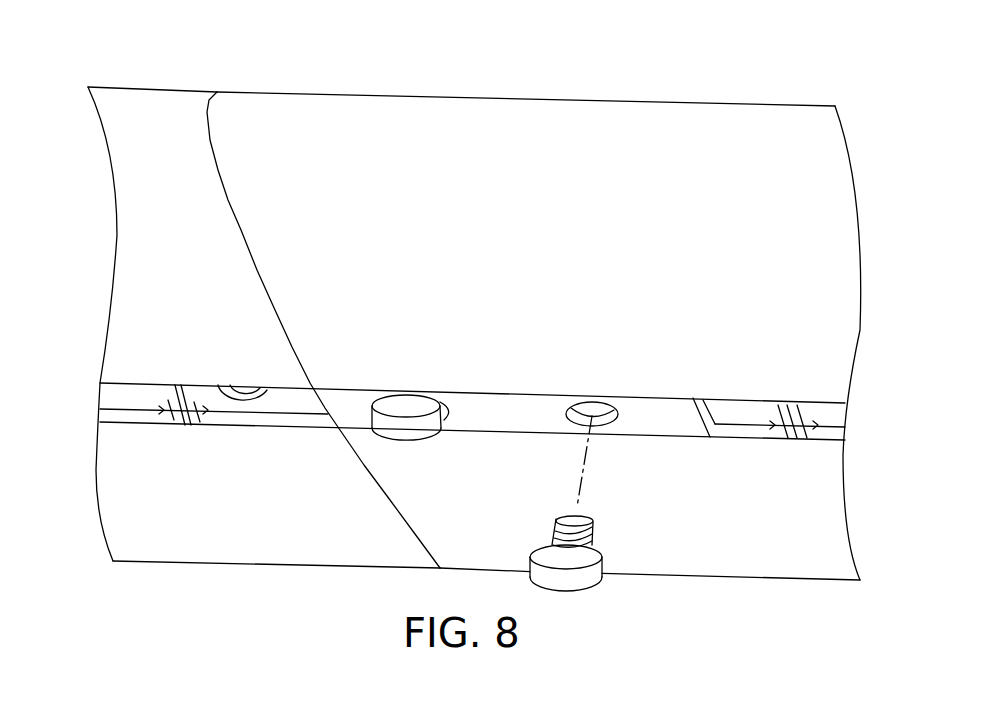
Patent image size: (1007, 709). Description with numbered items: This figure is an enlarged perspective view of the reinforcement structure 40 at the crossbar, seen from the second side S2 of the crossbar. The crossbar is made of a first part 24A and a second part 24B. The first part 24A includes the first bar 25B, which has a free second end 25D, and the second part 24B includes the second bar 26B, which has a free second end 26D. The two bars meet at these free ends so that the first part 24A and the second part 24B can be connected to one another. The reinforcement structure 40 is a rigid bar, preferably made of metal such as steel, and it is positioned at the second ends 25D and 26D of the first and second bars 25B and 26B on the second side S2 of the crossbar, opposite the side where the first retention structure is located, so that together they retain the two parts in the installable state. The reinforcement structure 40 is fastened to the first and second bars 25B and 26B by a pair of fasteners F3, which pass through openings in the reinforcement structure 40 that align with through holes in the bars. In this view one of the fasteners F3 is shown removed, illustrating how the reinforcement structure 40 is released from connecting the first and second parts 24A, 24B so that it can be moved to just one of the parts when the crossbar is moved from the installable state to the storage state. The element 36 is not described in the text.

The second side S2 is at (95, 252).
The first part 24A is at (213, 62).
The second part 24B is at (632, 57).
The first bar 25B is at (127, 86).
The second end of the first bar 25D is at (169, 86).
The second bar 26B is at (760, 101).
The second end of the second bar 26D is at (431, 93).
The flange of rail 36 is at (135, 398).
The reinforcement structure 40 is at (519, 417).
The fasteners F3 is at (410, 434).